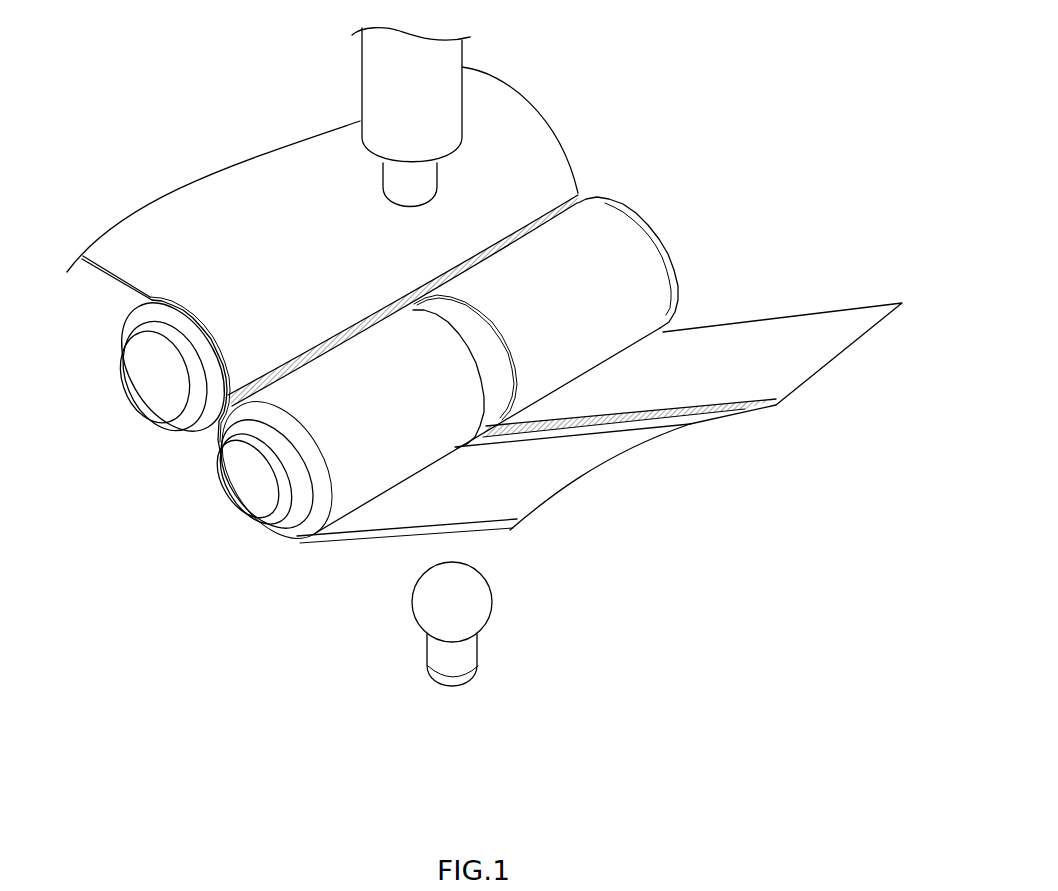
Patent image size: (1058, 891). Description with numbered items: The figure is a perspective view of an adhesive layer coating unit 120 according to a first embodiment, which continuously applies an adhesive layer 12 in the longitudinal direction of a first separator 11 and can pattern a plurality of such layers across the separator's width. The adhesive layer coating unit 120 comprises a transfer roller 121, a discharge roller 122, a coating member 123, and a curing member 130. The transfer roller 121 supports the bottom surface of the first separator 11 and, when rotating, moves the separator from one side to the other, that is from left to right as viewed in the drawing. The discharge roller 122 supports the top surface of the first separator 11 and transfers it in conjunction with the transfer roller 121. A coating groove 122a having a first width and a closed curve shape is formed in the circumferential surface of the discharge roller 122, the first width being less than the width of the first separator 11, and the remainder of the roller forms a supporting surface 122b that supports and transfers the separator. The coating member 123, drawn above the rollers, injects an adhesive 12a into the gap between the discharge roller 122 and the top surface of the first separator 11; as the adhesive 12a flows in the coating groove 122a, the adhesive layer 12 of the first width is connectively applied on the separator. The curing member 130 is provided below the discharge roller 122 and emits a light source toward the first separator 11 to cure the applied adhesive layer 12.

The first separator 11 is at (818, 337).
The adhesive layer 12 is at (428, 261).
The adhesive 12a is at (569, 203).
The adhesive layer coating unit 120 is at (665, 158).
The transfer roller 121 is at (155, 378).
The discharge roller 122 is at (466, 361).
The coating groove 122a is at (490, 313).
The supporting surface 122b is at (658, 268).
The coating member 123 is at (380, 65).
The curing member 130 is at (495, 600).